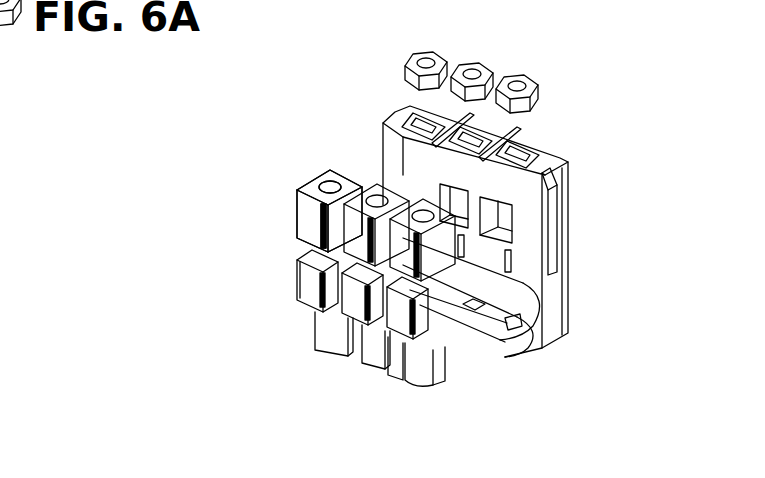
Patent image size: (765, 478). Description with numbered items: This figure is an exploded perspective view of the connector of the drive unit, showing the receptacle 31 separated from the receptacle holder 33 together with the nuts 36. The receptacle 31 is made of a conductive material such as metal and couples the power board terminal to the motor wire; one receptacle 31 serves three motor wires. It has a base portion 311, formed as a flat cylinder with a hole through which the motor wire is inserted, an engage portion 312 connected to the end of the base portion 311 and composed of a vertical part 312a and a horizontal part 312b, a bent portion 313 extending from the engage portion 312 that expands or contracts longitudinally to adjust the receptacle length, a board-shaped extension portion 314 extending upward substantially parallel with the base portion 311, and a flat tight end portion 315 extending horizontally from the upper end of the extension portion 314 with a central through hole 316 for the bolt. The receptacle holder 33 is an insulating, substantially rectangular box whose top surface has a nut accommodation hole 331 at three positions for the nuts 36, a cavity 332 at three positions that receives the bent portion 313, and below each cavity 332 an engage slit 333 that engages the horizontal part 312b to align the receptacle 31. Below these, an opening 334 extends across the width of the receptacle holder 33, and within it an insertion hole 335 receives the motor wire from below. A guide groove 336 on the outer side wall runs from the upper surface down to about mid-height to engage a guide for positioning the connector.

The receptacle 31 is at (352, 248).
The base portion 311 is at (332, 326).
The engage portion 312 is at (366, 332).
The vertical part 312a is at (302, 300).
The horizontal part 312b is at (400, 350).
The bent portion 313 is at (438, 300).
The extension portion 314 is at (338, 181).
The tight end portion 315 is at (306, 188).
The through hole 316 is at (336, 182).
The receptacle holder 33 is at (523, 248).
The nut accommodation hole 331 is at (566, 170).
The cavity 332 is at (507, 230).
The engage slit 333 is at (514, 262).
The opening 334 is at (520, 292).
The insertion hole 335 is at (522, 332).
The guide groove 336 is at (560, 198).
The nut 36 is at (532, 78).